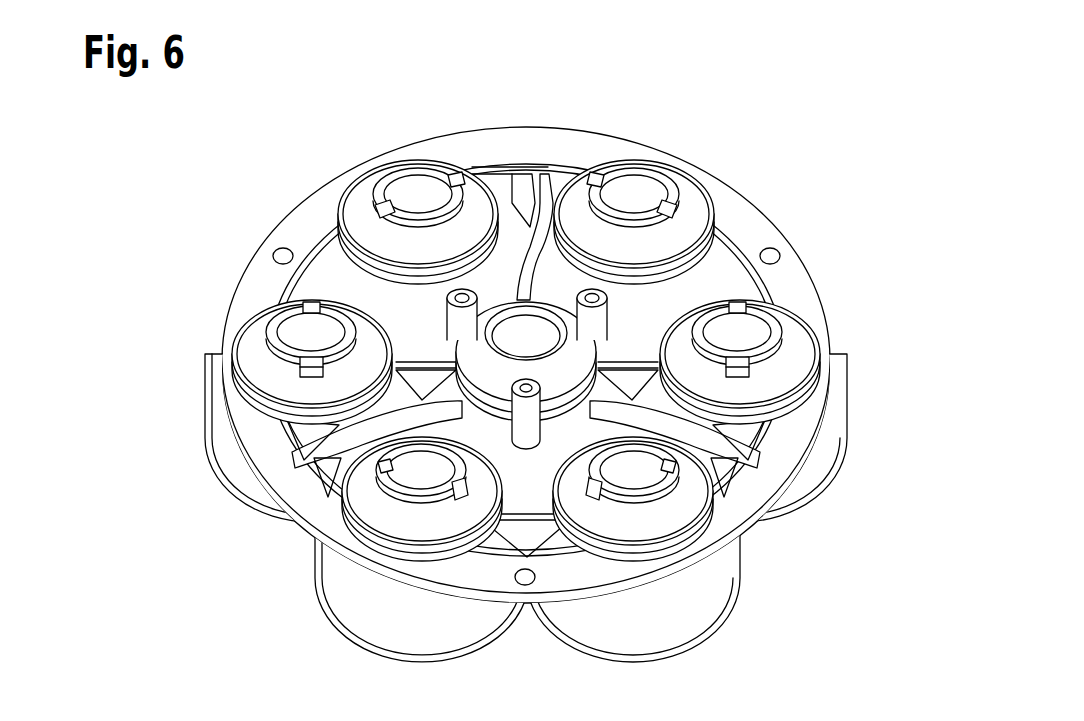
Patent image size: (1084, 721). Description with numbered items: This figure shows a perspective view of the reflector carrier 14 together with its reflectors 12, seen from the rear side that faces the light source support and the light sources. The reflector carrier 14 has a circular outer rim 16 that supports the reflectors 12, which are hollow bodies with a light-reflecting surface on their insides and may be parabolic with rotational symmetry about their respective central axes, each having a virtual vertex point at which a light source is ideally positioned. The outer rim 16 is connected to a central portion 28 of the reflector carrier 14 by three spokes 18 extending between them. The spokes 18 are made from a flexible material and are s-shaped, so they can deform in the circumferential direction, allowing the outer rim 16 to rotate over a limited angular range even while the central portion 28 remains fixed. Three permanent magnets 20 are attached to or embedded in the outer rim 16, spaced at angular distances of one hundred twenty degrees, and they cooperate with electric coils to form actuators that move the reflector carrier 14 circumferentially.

The reflector 12 is at (372, 192).
The reflector carrier 14 is at (821, 173).
The outer rim 16 is at (733, 217).
The spoke 18 is at (510, 167).
The permanent magnet 20 is at (278, 250).
The central portion 28 is at (567, 372).